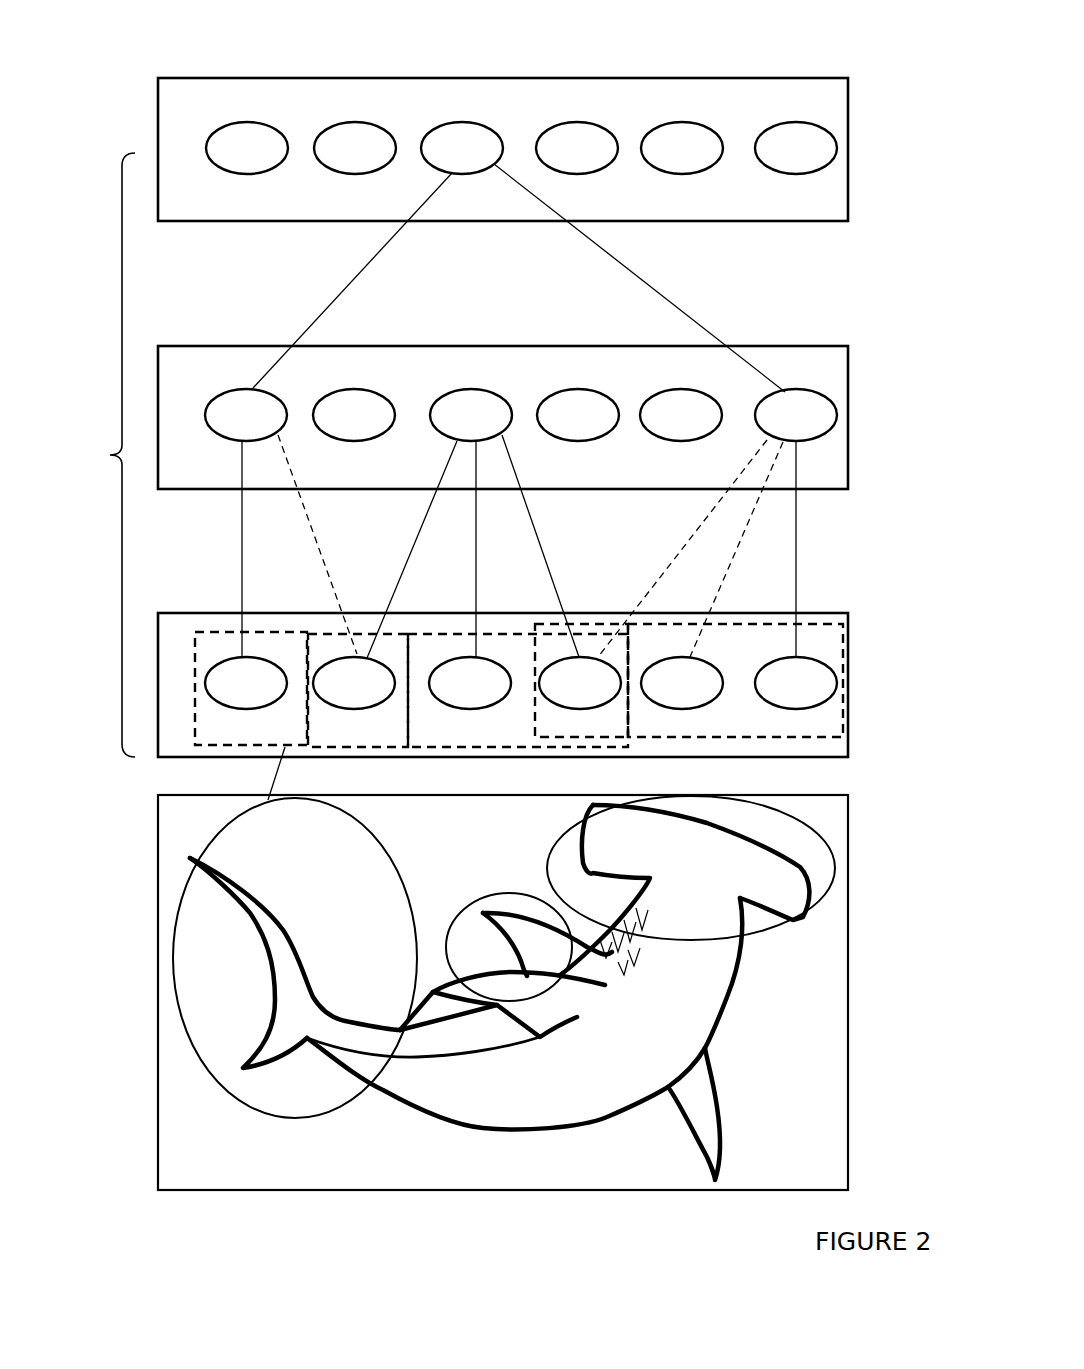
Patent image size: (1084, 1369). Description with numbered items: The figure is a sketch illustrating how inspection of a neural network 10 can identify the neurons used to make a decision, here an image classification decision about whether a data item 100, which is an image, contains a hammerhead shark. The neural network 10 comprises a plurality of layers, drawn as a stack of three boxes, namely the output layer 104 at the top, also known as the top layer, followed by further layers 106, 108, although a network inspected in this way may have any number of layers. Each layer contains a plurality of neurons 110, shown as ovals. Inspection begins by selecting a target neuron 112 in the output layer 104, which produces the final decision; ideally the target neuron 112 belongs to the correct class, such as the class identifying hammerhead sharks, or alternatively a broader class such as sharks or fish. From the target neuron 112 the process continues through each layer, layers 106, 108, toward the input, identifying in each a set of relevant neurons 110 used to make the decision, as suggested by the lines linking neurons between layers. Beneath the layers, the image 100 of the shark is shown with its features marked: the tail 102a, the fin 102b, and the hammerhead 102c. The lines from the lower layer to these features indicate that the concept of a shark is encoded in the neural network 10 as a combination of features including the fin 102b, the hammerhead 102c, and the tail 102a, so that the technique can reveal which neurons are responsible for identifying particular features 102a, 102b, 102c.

The neural network 10 is at (88, 455).
The data item 100 is at (627, 1153).
The tail 102a is at (176, 1002).
The fin 102b is at (435, 747).
The hammerhead 102c is at (722, 738).
The output layer 104 is at (535, 116).
The layer 106 is at (848, 372).
The layer 108 is at (848, 658).
The neurons 110 is at (352, 138).
The target neuron 112 is at (457, 135).